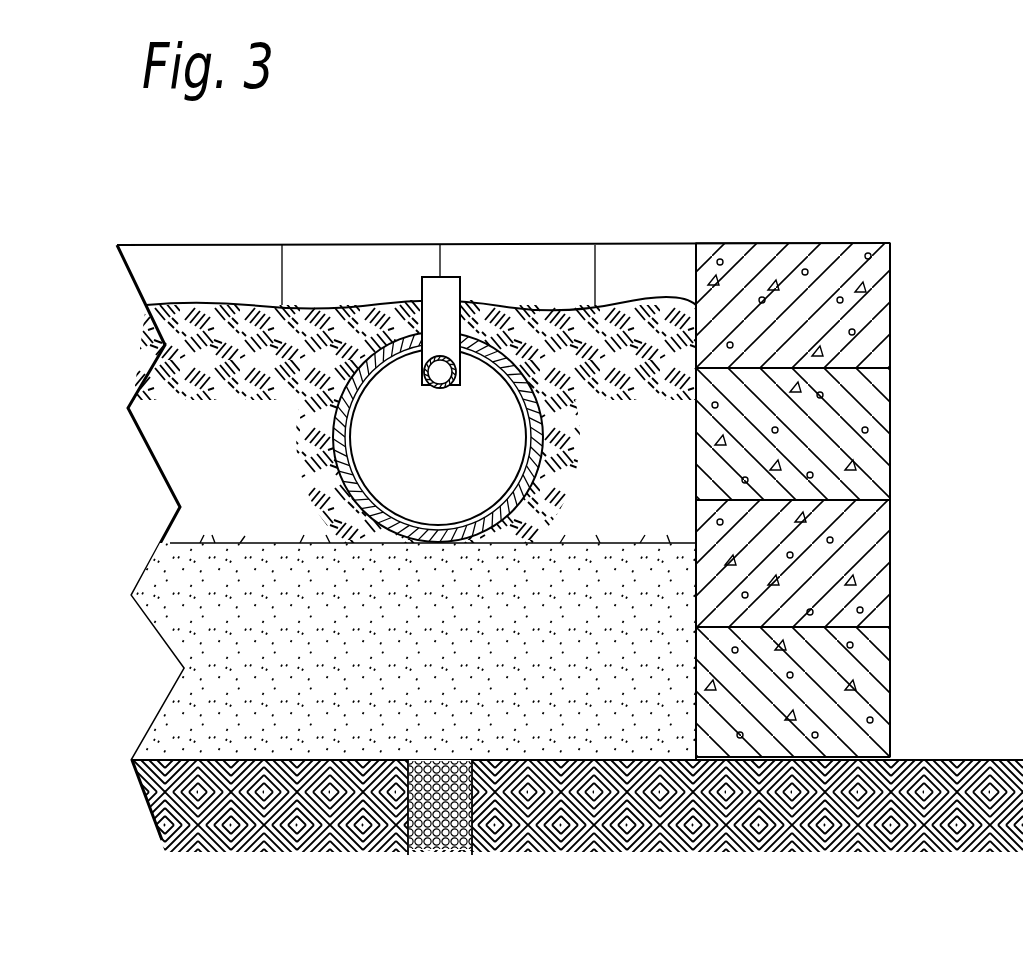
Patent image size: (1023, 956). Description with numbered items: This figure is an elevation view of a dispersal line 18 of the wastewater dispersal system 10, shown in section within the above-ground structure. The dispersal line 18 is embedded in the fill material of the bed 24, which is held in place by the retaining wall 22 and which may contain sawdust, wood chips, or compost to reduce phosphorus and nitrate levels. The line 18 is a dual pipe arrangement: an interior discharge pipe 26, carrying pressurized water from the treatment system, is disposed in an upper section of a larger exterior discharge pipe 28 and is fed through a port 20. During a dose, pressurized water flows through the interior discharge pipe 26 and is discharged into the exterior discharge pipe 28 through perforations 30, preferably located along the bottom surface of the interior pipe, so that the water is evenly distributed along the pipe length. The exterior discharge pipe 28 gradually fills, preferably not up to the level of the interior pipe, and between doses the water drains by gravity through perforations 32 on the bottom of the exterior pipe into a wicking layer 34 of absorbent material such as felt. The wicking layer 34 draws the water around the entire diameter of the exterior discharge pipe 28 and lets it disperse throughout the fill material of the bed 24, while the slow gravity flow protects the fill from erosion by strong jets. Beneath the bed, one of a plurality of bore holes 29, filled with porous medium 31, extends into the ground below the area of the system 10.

The wastewater dispersal system 10 is at (830, 146).
The dispersal line 18 is at (372, 437).
The port 20 is at (450, 277).
The retaining wall 22 is at (884, 272).
The bed 24 is at (177, 433).
The interior discharge pipe 26 is at (458, 366).
The exterior discharge pipe 28 is at (343, 433).
The bore hole 29 is at (487, 807).
The perforations 30 is at (457, 383).
The porous medium 31 is at (422, 847).
The perforations 32 is at (443, 527).
The wicking layer 34 is at (347, 478).